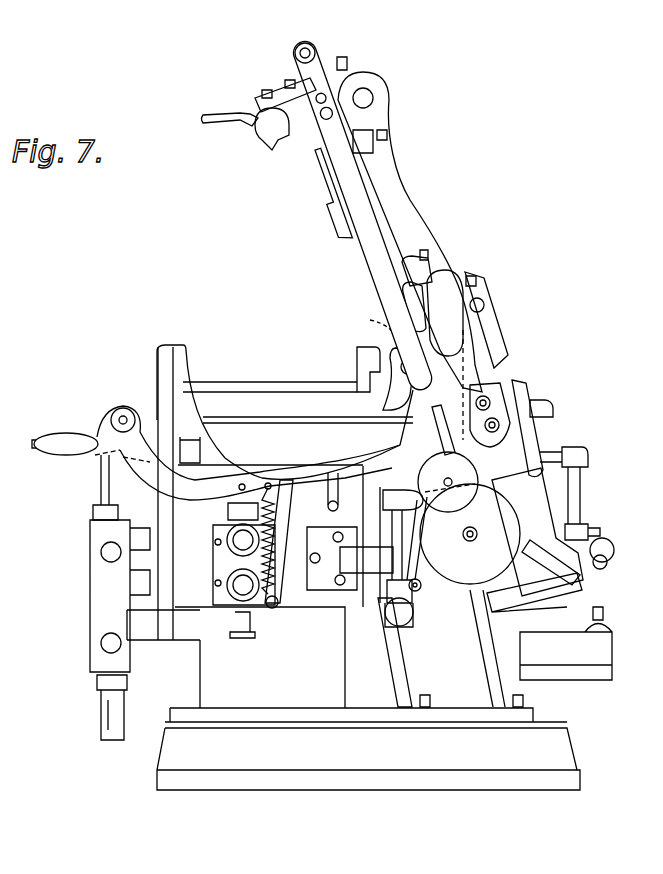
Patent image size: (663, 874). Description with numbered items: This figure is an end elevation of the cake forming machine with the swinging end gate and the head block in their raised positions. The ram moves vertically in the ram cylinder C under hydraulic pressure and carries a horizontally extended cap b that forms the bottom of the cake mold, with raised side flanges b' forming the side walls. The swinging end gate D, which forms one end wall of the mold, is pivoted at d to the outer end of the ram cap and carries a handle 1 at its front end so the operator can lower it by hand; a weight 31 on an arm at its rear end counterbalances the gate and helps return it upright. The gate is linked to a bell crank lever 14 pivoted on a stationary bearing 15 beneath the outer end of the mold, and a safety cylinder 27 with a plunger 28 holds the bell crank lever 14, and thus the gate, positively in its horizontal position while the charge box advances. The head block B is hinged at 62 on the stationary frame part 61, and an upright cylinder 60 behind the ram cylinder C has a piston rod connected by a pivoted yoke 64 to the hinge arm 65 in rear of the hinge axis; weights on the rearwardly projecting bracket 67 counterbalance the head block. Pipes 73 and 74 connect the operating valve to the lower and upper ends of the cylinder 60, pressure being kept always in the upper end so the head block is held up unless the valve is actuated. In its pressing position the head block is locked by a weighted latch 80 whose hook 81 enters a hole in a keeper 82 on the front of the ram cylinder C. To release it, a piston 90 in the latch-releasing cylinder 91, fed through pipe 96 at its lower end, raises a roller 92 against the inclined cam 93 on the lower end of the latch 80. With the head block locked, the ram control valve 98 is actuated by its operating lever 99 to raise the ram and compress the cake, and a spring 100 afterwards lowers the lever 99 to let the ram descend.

The handle 1 is at (299, 46).
The bell crank lever 14 is at (383, 517).
The stationary bearing 15 is at (350, 558).
The safety cylinder 27 is at (412, 600).
The plunger 28 is at (405, 625).
The weight 31 is at (469, 494).
The upright cylinder 60 is at (518, 498).
The stationary frame part 61 is at (529, 640).
The hinge 62 is at (372, 320).
The pivoted yoke 64 is at (480, 325).
The hinge arm 65 is at (488, 387).
The rearwardly projecting bracket 67 is at (478, 440).
The pipe 73 is at (606, 546).
The pipe 74 is at (558, 450).
The latch 80 is at (287, 102).
The hook 81 is at (277, 137).
The keeper 82 is at (150, 418).
The piston 90 is at (101, 484).
The latch-releasing cylinder 91 is at (98, 595).
The roller 92 is at (113, 416).
The cam 93 is at (208, 125).
The pipe 96 is at (171, 636).
The ram control valve 98 is at (243, 608).
The operating lever 99 is at (247, 454).
The spring 100 is at (288, 544).
The head block B is at (409, 248).
The ram cylinder C is at (285, 527).
The swinging end gate D is at (366, 262).
The ram cap b is at (298, 402).
The raised side flanges b' is at (285, 404).
The pivot d is at (399, 380).